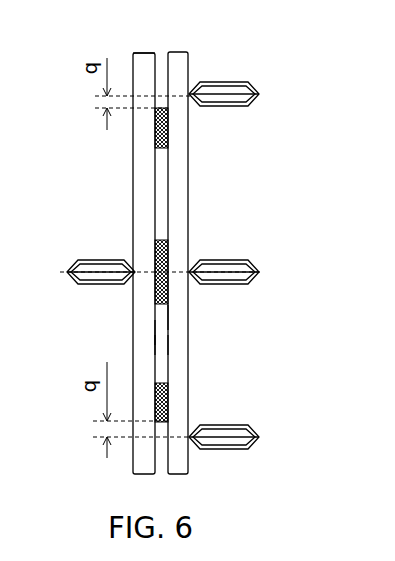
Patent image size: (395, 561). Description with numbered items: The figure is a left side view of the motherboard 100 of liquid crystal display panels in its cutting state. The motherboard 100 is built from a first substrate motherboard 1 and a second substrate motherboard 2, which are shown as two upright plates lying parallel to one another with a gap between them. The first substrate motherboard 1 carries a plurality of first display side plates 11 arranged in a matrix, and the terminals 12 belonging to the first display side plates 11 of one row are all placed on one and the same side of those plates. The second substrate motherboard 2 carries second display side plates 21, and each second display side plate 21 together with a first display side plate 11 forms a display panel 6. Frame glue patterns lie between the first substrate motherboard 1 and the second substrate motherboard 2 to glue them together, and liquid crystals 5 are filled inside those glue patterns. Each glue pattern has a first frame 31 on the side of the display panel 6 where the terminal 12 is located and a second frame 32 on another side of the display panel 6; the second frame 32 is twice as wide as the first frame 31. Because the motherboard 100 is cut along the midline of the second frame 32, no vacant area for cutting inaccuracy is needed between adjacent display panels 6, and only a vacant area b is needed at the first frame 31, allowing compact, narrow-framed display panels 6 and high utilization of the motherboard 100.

The motherboard of liquid crystal display panels 100 is at (117, 323).
The first substrate motherboard 1 is at (147, 210).
The first display side plates 11 is at (140, 332).
The terminals 12 is at (133, 52).
The second substrate motherboard 2 is at (187, 190).
The second display side plates 21 is at (178, 318).
The first frame 31 is at (165, 129).
The second frame 32 is at (167, 258).
The liquid crystals 5 is at (163, 345).
The display panel 6 is at (173, 385).